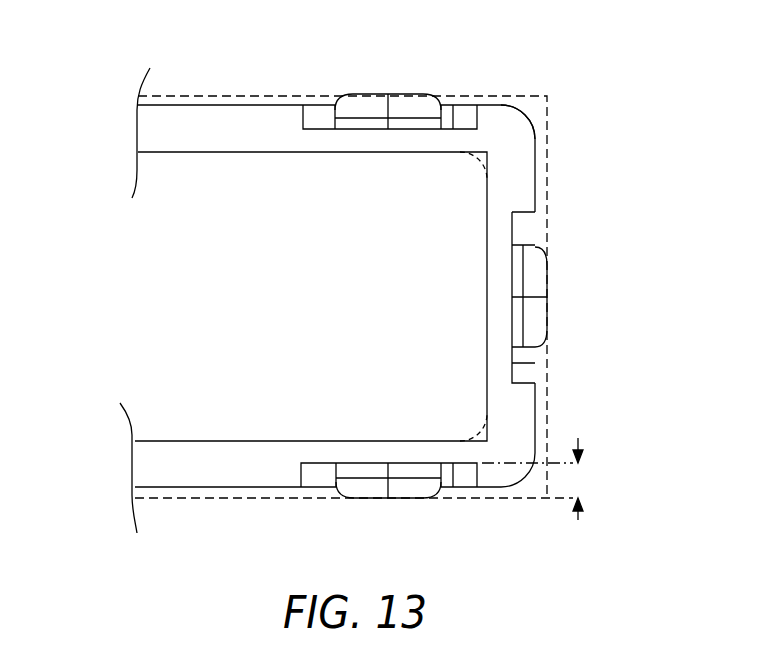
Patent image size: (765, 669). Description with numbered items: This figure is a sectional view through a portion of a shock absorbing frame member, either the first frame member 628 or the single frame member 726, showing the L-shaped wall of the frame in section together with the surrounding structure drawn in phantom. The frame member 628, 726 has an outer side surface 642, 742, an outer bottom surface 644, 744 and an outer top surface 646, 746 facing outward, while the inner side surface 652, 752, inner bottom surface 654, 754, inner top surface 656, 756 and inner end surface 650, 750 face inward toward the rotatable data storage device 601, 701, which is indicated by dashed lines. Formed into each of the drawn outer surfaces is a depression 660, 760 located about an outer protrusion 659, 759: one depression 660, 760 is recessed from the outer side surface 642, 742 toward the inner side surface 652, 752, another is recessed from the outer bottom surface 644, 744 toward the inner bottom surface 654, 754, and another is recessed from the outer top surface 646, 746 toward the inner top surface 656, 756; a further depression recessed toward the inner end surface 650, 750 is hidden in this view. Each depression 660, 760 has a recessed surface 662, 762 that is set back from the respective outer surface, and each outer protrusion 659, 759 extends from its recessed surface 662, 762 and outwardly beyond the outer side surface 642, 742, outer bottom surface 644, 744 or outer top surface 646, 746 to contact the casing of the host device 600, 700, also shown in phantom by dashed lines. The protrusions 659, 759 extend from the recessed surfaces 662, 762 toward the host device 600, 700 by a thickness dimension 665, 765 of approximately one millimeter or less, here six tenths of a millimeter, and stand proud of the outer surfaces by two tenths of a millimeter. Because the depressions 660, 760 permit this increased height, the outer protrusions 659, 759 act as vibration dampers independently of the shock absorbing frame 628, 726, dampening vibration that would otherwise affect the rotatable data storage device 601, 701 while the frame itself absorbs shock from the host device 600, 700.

The host device 600 is at (346, 300).
The host device 700 is at (272, 97).
The rotatable data storage device 601 is at (566, 154).
The rotatable data storage device 701 is at (495, 159).
The first frame member 628 is at (591, 96).
The single frame member 726 is at (531, 107).
The outer side surface 642 is at (621, 180).
The outer side surface 742 is at (535, 185).
The outer bottom surface 644 is at (540, 518).
The outer bottom surface 744 is at (490, 488).
The outer top surface 646 is at (534, 69).
The outer top surface 746 is at (483, 105).
The inner end surface 650 is at (163, 142).
The inner end surface 750 is at (198, 180).
The inner side surface 652 is at (578, 280).
The inner side surface 752 is at (488, 187).
The inner bottom surface 654 is at (225, 488).
The inner bottom surface 754 is at (217, 441).
The inner top surface 656 is at (225, 101).
The inner top surface 756 is at (187, 152).
The outer protrusion 659 is at (508, 288).
The outer protrusion 759 is at (378, 103).
The depression 660 is at (468, 307).
The depression 760 is at (311, 110).
The recessed surface 662 is at (544, 303).
The recessed surface 762 is at (453, 105).
The thickness dimension 665 is at (648, 479).
The thickness dimension 765 is at (581, 455).